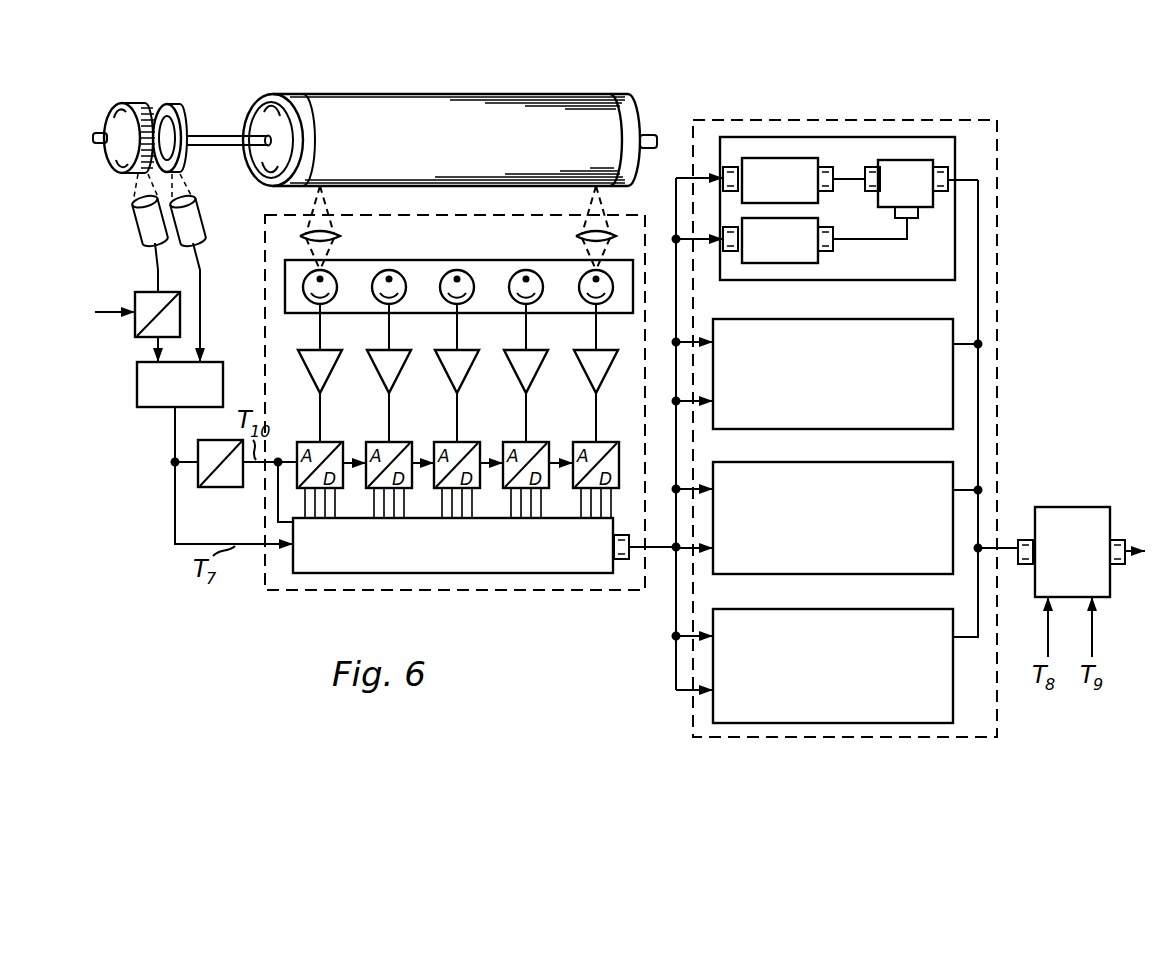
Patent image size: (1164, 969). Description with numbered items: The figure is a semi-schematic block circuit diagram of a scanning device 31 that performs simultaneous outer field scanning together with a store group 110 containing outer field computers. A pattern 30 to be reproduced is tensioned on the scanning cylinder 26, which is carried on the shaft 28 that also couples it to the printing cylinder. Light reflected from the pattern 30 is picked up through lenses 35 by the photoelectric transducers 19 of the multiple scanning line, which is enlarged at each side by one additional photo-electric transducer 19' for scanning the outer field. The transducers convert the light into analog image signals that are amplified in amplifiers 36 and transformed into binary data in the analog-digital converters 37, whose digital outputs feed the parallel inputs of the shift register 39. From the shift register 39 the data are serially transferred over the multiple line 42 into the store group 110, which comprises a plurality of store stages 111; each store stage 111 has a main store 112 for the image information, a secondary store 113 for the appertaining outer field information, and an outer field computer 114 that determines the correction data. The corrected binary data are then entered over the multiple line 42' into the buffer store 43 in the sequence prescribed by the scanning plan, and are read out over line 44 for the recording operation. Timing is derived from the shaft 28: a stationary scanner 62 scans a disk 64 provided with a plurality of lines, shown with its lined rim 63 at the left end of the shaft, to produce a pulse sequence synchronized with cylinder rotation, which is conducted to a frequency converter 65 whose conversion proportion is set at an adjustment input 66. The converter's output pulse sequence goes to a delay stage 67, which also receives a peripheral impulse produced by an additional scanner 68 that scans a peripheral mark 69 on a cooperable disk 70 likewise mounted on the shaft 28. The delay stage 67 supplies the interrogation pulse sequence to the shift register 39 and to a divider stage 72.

The transducers 19 is at (459, 283).
The additional photo-electric transducer 19' is at (434, 305).
The scanning cylinder 26 is at (627, 128).
The shaft 28 is at (214, 136).
The pattern 30 is at (371, 118).
The scanning device 31 is at (540, 584).
The lenses 35 is at (311, 234).
The amplifiers 36 is at (324, 370).
The analog-digital converters 37 is at (316, 446).
The shift register 39 is at (463, 560).
The multiple line 42 is at (654, 586).
The multiple line 42' is at (1005, 579).
The buffer store 43 is at (1067, 518).
The line 44 is at (1131, 543).
The stationary scanner 62 is at (137, 227).
The encoder disc 63 is at (140, 103).
The disk 64 is at (121, 165).
The frequency converter 65 is at (135, 323).
The adjustment input 66 is at (116, 309).
The delay stage 67 is at (168, 396).
The additional scanner 68 is at (203, 228).
The peripheral mark 69 is at (187, 155).
The cooperable disk 70 is at (175, 104).
The divider stage 72 is at (218, 487).
The store group 110 is at (784, 131).
The store stage 111 is at (897, 148).
The main store 112 is at (800, 190).
The secondary store 113 is at (800, 252).
The outer field computer 114 is at (922, 188).